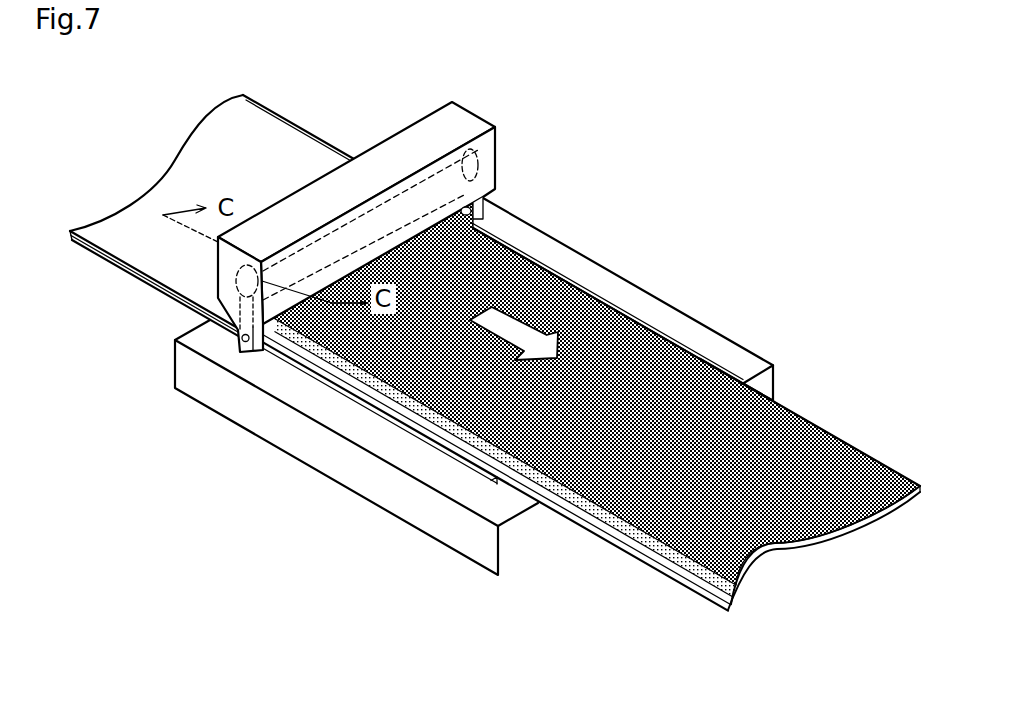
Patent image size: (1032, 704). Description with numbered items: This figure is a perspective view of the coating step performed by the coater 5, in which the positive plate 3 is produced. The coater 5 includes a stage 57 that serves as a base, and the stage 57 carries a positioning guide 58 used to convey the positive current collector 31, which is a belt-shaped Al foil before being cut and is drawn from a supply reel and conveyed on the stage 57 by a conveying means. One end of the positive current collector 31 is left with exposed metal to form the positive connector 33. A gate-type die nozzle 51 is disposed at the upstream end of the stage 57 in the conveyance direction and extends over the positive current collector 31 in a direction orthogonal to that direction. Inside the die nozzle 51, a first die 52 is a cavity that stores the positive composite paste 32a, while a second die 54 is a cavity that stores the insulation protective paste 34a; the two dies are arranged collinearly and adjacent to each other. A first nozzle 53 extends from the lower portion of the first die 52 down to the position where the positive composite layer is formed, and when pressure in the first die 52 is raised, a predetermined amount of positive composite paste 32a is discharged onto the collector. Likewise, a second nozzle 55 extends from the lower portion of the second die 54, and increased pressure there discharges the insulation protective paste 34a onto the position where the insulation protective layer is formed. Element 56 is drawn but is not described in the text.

The positive plate 3 is at (713, 364).
The coater 5 is at (572, 139).
The positive current collector 31 is at (272, 132).
The positive composite paste 32a is at (807, 452).
The positive connector 33 is at (688, 576).
The insulation protective paste 34a is at (618, 531).
The gate-type die nozzle 51 is at (474, 111).
The first die 52 is at (405, 192).
The first nozzle 53 is at (442, 203).
The second die 54 is at (237, 272).
The second nozzle 55 is at (232, 309).
The roller 56 is at (483, 232).
The stage 57 is at (668, 316).
The positioning guide 58 is at (397, 418).